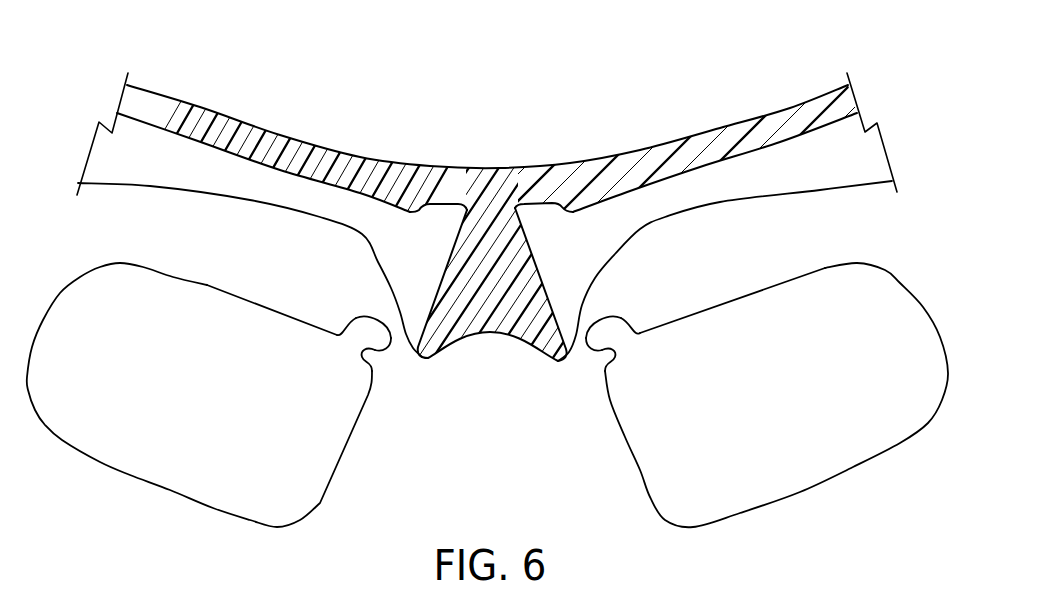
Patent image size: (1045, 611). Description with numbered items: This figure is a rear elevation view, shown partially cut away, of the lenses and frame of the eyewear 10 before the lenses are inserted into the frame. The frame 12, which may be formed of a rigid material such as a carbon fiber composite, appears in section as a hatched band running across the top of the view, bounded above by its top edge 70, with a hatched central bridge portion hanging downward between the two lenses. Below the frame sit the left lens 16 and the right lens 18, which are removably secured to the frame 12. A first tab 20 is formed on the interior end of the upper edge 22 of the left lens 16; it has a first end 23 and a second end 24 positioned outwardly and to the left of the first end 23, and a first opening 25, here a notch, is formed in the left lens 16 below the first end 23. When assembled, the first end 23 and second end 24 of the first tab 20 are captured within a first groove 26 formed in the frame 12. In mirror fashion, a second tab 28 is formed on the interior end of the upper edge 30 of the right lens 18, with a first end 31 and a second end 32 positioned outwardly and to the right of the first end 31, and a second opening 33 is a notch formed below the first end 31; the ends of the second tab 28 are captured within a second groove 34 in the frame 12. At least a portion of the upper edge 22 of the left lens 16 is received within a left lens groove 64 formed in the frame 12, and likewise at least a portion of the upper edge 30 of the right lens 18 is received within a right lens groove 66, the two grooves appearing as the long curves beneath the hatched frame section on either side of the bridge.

The eyewear 10 is at (711, 89).
The frame 12 is at (485, 176).
The top edge 70 is at (345, 153).
The left lens groove 64 is at (200, 179).
The right lens groove 66 is at (788, 180).
The first groove 26 is at (437, 213).
The second groove 34 is at (538, 212).
The left lens 16 is at (184, 381).
The right lens 18 is at (794, 388).
The upper edge 22 is at (212, 288).
The second end 24 is at (352, 325).
The first tab 20 is at (363, 326).
The first end 23 is at (383, 349).
The first opening 25 is at (366, 361).
The upper edge 30 is at (766, 287).
The second end 32 is at (626, 327).
The second tab 28 is at (605, 326).
The first end 31 is at (593, 348).
The second opening 33 is at (611, 362).